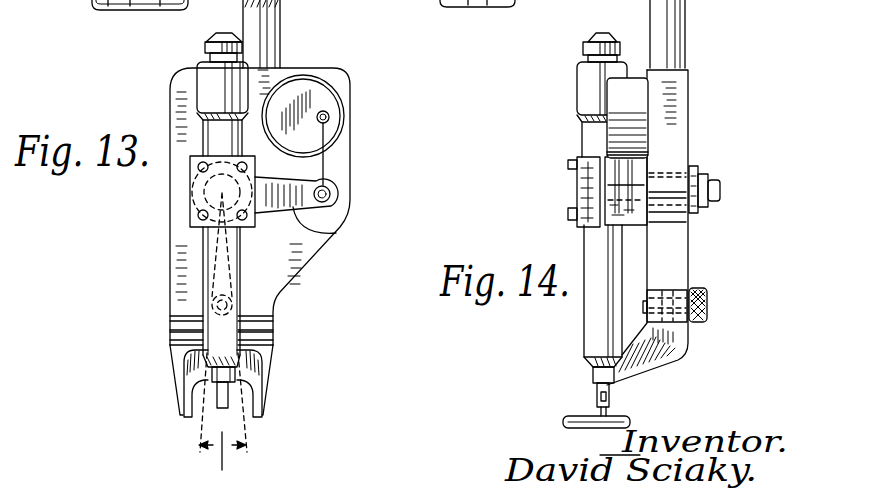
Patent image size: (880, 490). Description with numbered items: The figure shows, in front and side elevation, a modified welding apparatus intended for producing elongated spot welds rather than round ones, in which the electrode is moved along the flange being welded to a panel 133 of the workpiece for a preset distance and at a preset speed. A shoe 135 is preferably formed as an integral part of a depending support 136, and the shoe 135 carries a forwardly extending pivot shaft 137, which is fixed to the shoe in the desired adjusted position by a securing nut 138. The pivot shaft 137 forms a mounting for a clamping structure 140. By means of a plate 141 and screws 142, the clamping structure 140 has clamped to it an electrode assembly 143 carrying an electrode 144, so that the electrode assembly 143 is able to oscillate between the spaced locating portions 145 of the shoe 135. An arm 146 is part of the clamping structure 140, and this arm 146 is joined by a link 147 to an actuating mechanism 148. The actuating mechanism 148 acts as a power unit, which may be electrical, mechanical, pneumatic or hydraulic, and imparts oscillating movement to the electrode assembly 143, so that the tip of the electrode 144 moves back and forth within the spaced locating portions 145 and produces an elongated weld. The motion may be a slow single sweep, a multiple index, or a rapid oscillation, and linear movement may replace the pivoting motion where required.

In FIG. 14, the panel 133 is at (470, 22).
In FIG. 13, the shoe 135 is at (186, 264).
In FIG. 14, the shoe 135 is at (672, 250).
In FIG. 13, the depending support 136 is at (278, 31).
In FIG. 14, the depending support 136 is at (688, 23).
In FIG. 13, the pivot shaft 137 is at (190, 196).
In FIG. 14, the pivot shaft 137 is at (665, 182).
In FIG. 14, the securing nut 138 is at (704, 187).
In FIG. 14, the clamping structure 140 is at (607, 153).
In FIG. 14, the plate 141 is at (586, 178).
In FIG. 14, the screws 142 is at (569, 214).
In FIG. 13, the electrode assembly 143 is at (240, 272).
In FIG. 14, the electrode assembly 143 is at (598, 309).
In FIG. 14, the electrode 144 is at (603, 398).
In FIG. 13, the spaced locating portions 145 is at (182, 396).
In FIG. 14, the spaced locating portions 145 is at (592, 419).
In FIG. 13, the arm 146 is at (300, 227).
In FIG. 13, the link 147 is at (326, 162).
In FIG. 13, the actuating mechanism 148 is at (320, 98).
In FIG. 14, the actuating mechanism 148 is at (617, 95).